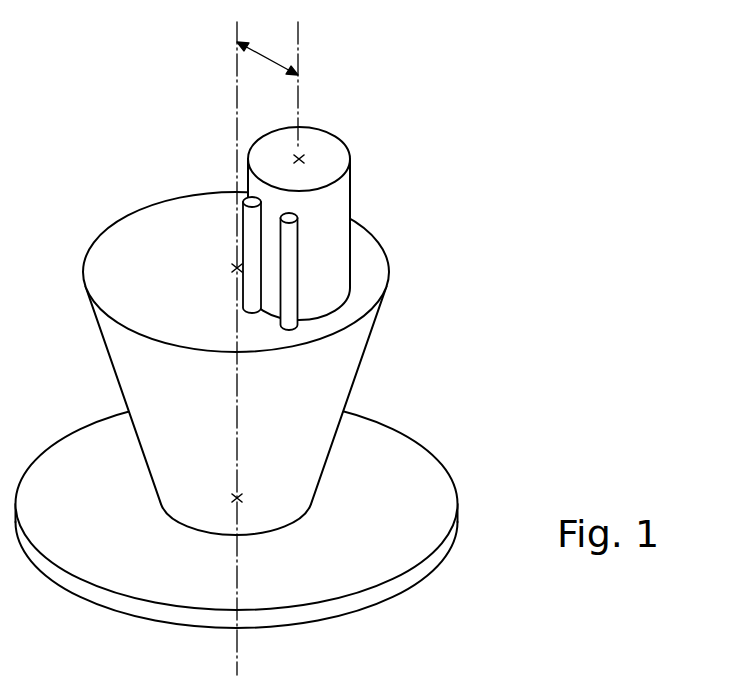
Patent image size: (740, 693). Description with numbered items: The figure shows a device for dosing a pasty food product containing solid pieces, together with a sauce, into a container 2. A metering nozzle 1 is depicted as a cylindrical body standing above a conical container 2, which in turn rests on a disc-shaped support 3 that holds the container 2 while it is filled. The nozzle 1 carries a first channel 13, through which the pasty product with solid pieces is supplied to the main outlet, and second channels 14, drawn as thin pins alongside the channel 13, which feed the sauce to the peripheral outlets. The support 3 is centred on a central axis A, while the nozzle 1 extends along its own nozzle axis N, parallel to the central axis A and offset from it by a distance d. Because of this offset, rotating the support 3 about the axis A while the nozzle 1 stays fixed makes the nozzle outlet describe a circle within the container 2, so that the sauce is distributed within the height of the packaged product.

The metering nozzle 1 is at (305, 208).
The first channel 13 is at (327, 147).
The second channels 14 is at (247, 246).
The container 2 is at (412, 324).
The support 3 is at (425, 453).
The central axis A is at (236, 337).
The nozzle axis N is at (298, 75).
The distance d is at (267, 54).